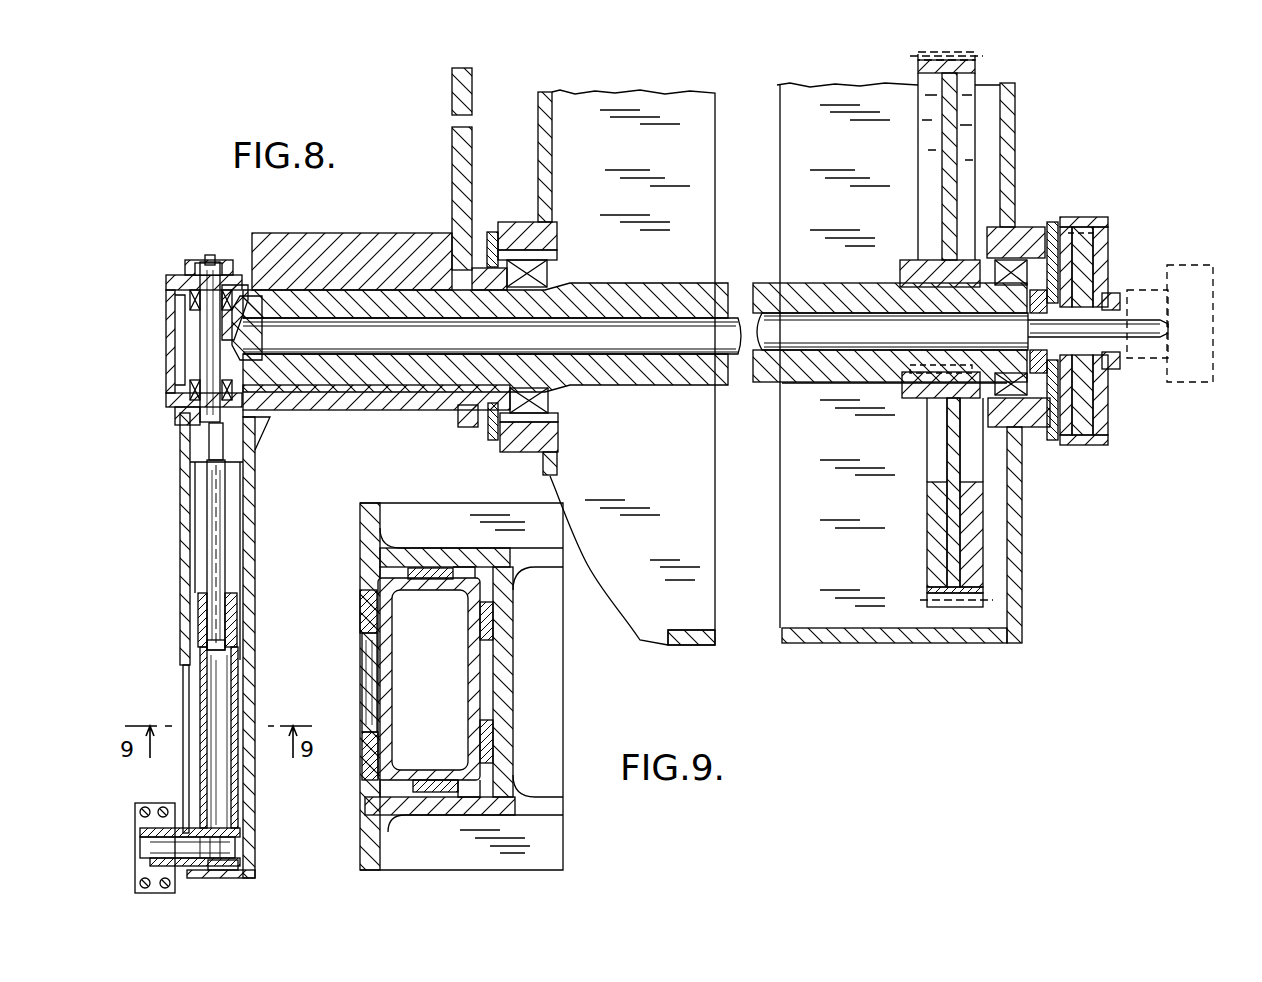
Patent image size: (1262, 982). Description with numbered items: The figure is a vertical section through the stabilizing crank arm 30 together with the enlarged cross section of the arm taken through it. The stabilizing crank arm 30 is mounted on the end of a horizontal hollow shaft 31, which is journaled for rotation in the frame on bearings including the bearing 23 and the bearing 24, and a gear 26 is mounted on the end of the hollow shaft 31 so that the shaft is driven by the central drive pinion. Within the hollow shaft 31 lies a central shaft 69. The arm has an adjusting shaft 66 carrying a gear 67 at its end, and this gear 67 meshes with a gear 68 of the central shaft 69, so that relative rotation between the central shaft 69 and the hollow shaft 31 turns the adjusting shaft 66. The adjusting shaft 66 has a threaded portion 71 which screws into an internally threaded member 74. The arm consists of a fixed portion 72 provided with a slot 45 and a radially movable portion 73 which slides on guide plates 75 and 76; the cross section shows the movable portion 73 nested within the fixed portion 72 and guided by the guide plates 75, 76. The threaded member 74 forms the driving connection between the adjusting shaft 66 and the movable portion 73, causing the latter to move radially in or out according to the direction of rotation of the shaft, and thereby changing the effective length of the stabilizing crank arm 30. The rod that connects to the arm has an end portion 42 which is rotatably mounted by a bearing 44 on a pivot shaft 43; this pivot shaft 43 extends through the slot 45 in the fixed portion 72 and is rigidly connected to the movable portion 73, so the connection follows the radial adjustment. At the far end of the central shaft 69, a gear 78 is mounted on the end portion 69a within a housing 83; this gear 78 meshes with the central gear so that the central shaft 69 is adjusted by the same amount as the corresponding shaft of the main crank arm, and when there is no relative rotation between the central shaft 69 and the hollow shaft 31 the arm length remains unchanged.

In FIG. 8, the bearing 23 is at (535, 272).
In FIG. 8, the bearing 24 is at (1010, 268).
In FIG. 8, the gear 26 is at (933, 537).
In FIG. 8, the stabilizing crank arm 30 is at (170, 525).
In FIG. 8, the hollow shaft 31 is at (643, 378).
In FIG. 8, the end portion of the rod 42 is at (158, 808).
In FIG. 8, the pivot shaft 43 is at (193, 850).
In FIG. 8, the bearing 44 is at (145, 836).
In FIG. 8, the slot 45 is at (192, 777).
In FIG. 9, the slot 45 is at (368, 692).
In FIG. 8, the adjusting shaft 66 is at (210, 360).
In FIG. 8, the gear 67 is at (193, 307).
In FIG. 8, the gear 68 is at (245, 288).
In FIG. 8, the central shaft 69 is at (650, 333).
In FIG. 8, the end portion of the shaft 69a is at (1152, 328).
In FIG. 8, the threaded portion 71 is at (217, 557).
In FIG. 8, the fixed portion 72 is at (180, 455).
In FIG. 9, the fixed portion 72 is at (505, 678).
In FIG. 8, the radially movable portion 73 is at (240, 786).
In FIG. 9, the radially movable portion 73 is at (385, 683).
In FIG. 8, the internally threaded member 74 is at (235, 630).
In FIG. 9, the guide plate 75 is at (372, 590).
In FIG. 9, the guide plate 76 is at (430, 573).
In FIG. 8, the gear 78 is at (1085, 257).
In FIG. 8, the housing 83 is at (1085, 218).